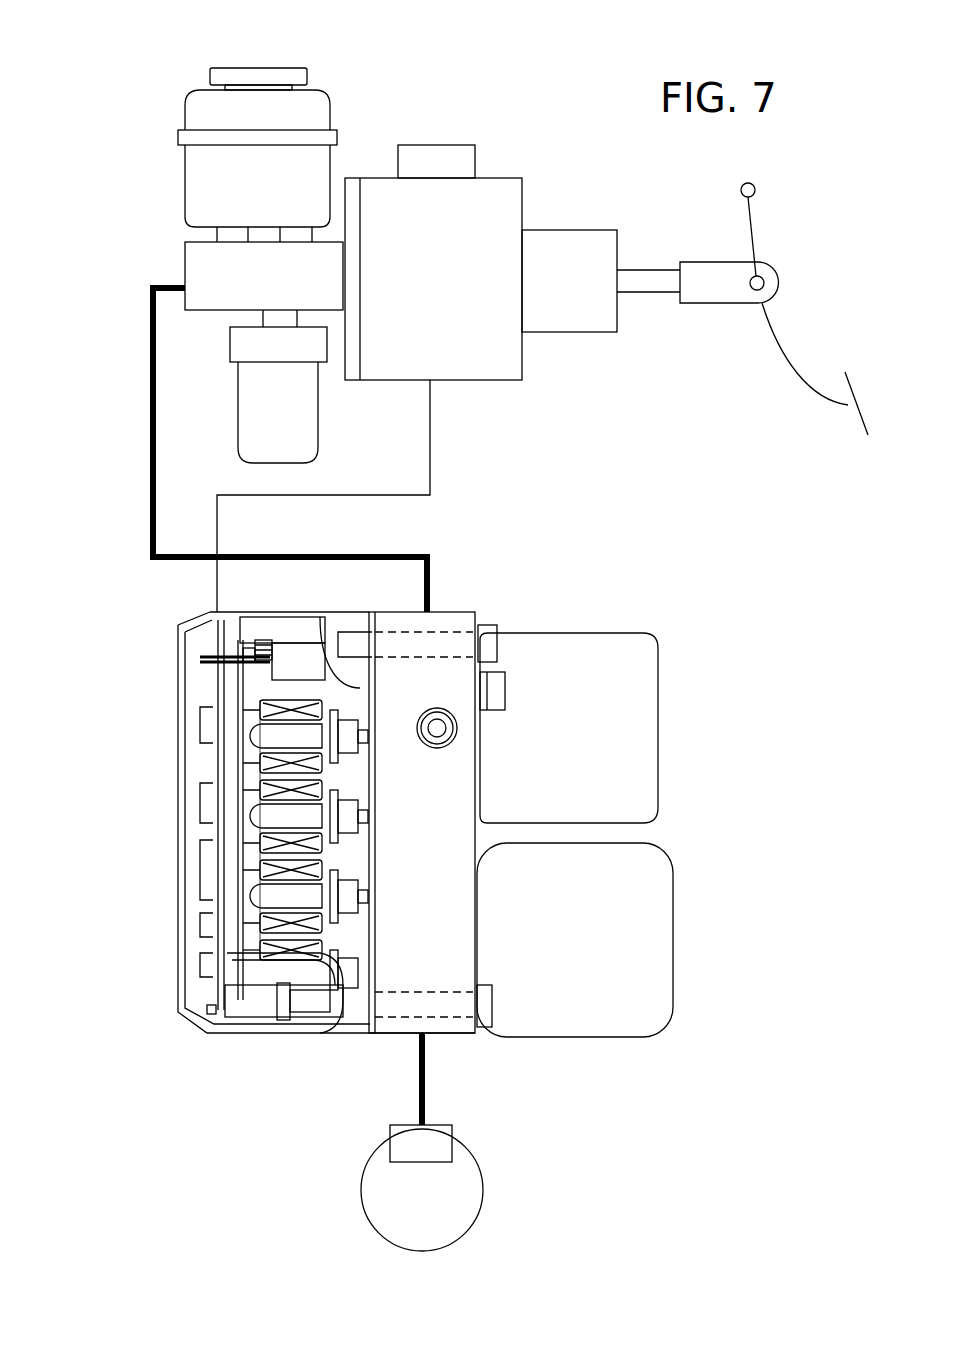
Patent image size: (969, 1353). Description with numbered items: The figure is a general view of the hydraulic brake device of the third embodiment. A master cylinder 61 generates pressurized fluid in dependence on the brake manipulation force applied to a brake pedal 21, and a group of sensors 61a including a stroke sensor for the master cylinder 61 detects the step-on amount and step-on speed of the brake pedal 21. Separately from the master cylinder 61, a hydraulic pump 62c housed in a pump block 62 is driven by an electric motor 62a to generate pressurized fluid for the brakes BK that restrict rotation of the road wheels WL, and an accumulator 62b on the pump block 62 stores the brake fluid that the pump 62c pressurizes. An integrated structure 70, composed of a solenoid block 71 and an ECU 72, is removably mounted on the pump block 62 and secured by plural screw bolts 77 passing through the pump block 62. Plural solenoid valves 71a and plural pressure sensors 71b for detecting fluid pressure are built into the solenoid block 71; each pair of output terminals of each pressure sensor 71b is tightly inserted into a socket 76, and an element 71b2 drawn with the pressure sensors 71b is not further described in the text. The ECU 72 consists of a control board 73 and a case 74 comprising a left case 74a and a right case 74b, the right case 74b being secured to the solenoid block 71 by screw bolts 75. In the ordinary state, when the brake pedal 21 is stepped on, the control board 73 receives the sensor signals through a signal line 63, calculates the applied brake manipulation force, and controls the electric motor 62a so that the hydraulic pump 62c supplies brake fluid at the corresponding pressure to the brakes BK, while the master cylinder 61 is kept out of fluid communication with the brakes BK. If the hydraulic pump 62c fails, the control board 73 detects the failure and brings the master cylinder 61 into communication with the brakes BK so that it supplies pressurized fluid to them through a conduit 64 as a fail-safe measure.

The master cylinder 61 is at (491, 98).
The group of sensors 61a is at (490, 183).
The brake pedal 21 is at (773, 328).
The conduit 64 is at (148, 445).
The signal line 63 is at (378, 497).
The pump block 62 is at (440, 612).
The electric motor 62a is at (648, 732).
The accumulator 62b is at (660, 930).
The hydraulic pump 62c is at (437, 750).
The screw bolts 77 is at (495, 640).
The control board 73 is at (205, 770).
The case 74 is at (155, 793).
The left case 74a is at (178, 660).
The right case 74b is at (243, 623).
The solenoid valves 71a is at (256, 735).
The pressure sensors 71b is at (288, 650).
The valve body portion 71b2 is at (280, 643).
The socket 76 is at (250, 650).
The screw bolts 75 is at (287, 1002).
The ECU 72 is at (275, 1040).
The solenoid block 71 is at (337, 1035).
The integrated structure 70 is at (345, 1098).
The brakes BK is at (445, 1140).
The road wheels WL is at (478, 1190).